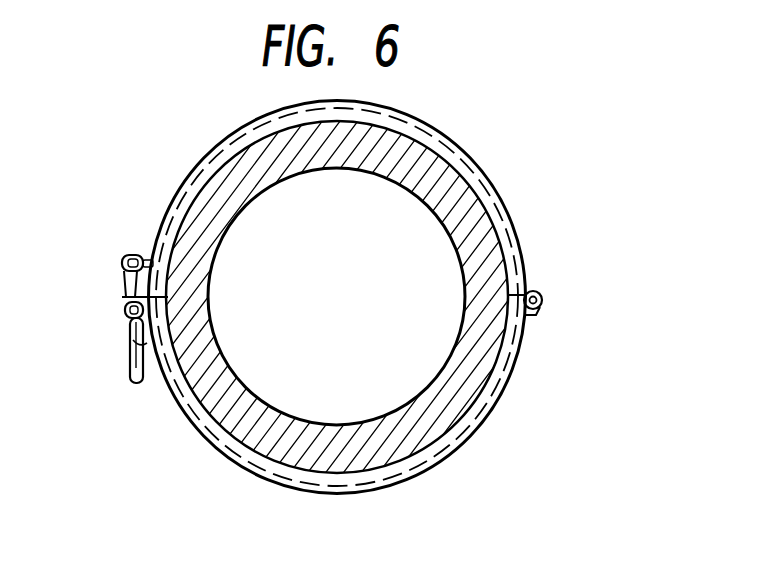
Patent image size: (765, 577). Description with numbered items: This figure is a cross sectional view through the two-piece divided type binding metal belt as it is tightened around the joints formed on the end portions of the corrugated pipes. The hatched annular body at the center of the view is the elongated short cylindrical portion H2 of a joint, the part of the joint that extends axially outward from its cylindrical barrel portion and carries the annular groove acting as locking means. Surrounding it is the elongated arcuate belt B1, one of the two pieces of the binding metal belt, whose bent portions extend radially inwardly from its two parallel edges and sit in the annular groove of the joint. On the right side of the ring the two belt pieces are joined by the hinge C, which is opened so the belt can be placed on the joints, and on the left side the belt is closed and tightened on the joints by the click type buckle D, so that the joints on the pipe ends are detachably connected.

The elongated arcuate belt B1 is at (452, 138).
The elongated short cylindrical portion H2 is at (407, 435).
The hinge C is at (542, 306).
The click type buckle D is at (127, 297).